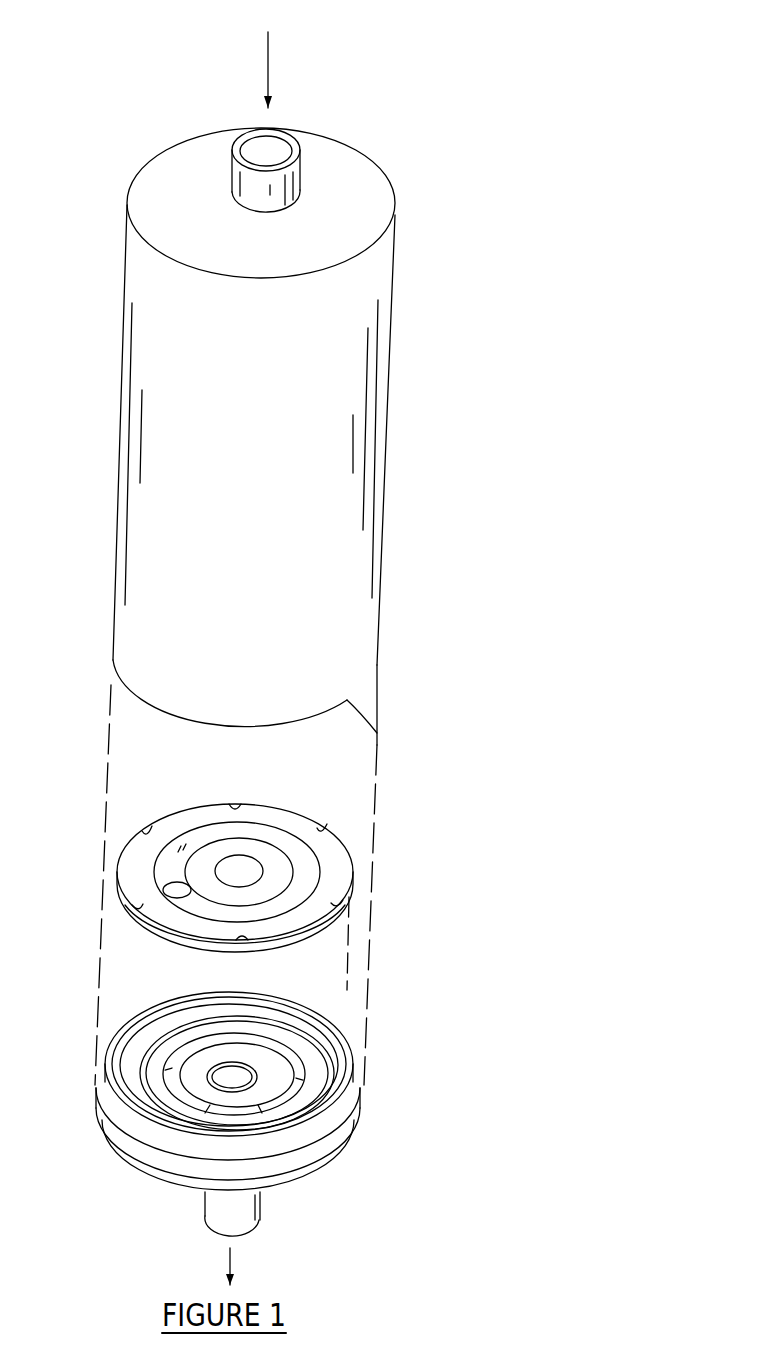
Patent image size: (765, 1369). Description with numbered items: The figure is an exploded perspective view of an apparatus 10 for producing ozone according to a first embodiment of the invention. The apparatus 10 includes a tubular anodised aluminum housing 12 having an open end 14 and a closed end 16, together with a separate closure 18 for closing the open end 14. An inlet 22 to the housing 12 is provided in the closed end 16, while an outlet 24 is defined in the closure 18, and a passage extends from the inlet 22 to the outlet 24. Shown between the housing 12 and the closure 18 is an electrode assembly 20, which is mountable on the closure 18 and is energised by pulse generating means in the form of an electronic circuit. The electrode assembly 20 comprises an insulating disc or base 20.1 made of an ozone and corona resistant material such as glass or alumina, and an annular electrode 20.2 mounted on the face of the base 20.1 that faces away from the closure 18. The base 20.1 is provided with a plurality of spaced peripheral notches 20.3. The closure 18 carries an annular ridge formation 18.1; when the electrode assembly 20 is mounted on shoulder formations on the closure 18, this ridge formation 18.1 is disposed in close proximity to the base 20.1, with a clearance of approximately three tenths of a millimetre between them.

The apparatus for producing ozone 10 is at (533, 103).
The housing 12 is at (366, 642).
The open end 14 is at (377, 733).
The closed end 16 is at (343, 168).
The closure 18 is at (360, 1103).
The annular ridge formation 18.1 is at (255, 1032).
The electrode assembly 20 is at (370, 820).
The insulating disc or base 20.1 is at (333, 873).
The annular electrode 20.2 is at (215, 838).
The peripheral notches 20.3 is at (322, 826).
The inlet 22 is at (293, 140).
The outlet 24 is at (243, 1224).